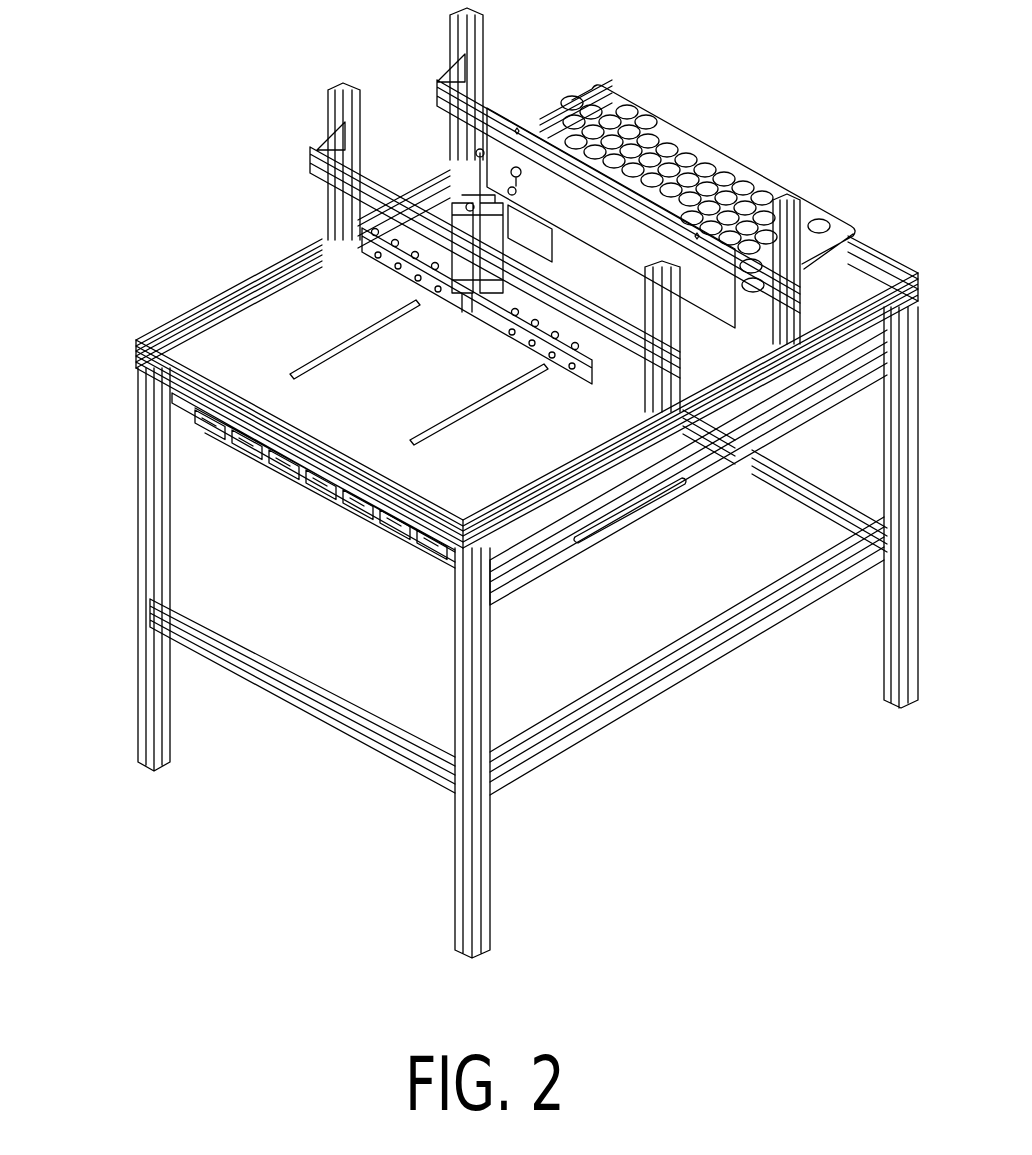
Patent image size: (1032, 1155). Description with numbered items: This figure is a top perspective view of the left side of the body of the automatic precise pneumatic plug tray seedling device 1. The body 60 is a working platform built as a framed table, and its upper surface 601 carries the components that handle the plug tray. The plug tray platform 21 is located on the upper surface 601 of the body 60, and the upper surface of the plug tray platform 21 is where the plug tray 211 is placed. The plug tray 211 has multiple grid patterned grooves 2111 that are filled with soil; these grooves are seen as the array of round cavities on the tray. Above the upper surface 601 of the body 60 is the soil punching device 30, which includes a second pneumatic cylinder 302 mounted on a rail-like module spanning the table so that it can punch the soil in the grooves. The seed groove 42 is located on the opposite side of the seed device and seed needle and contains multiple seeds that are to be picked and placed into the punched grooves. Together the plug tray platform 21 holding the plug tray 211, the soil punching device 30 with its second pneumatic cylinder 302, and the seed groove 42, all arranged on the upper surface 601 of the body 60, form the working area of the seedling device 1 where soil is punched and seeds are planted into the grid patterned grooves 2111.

The automatic precise pneumatic plug tray seedling device 1 is at (475, 483).
The body 60 is at (225, 329).
The upper surface 601 is at (262, 352).
The soil punching device 30 is at (535, 342).
The second pneumatic cylinder 302 is at (457, 263).
The plug tray platform 21 is at (747, 187).
The plug tray 211 is at (693, 137).
The grid patterned groove 2111 is at (730, 170).
The seed groove 42 is at (726, 318).